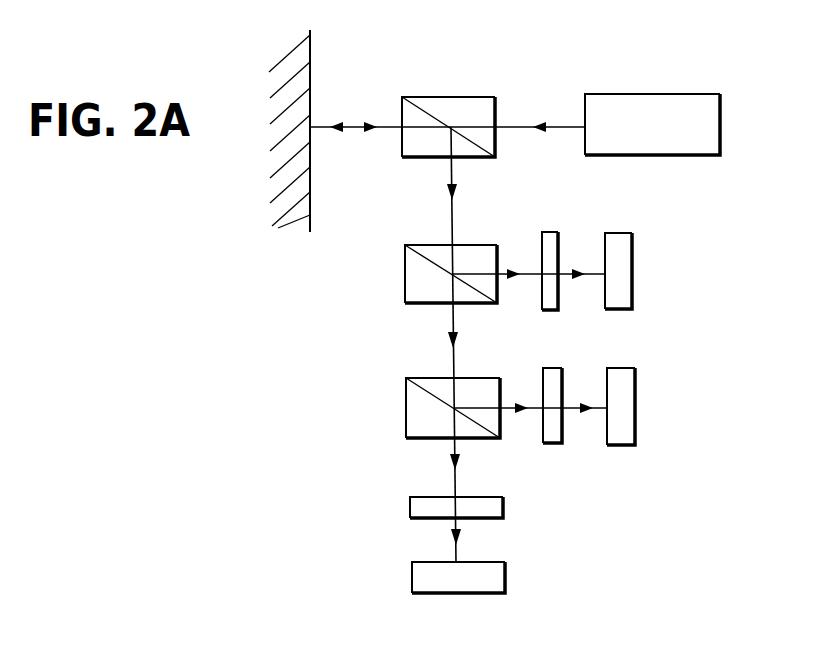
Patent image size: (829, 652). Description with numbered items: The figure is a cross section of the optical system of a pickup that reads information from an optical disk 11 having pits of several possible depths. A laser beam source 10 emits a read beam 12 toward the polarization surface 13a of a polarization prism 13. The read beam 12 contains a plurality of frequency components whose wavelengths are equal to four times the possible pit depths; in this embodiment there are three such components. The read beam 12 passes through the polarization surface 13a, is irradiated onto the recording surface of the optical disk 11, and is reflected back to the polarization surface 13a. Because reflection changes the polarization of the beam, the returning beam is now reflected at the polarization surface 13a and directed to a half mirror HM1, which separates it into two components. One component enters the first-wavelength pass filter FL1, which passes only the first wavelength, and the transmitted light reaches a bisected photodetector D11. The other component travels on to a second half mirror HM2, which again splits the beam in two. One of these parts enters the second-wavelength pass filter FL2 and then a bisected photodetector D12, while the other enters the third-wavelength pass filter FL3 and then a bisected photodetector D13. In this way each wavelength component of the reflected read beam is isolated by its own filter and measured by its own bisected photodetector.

The laser beam source 10 is at (662, 105).
The optical disk 11 is at (310, 53).
The read beam 12 is at (557, 121).
The polarization prism 13 is at (482, 120).
The polarization surface 13a is at (478, 143).
The half mirror HM1 is at (405, 275).
The half mirror HM2 is at (406, 408).
The λ1-pass filter FL1 is at (551, 240).
The λ2-pass filter FL2 is at (553, 377).
The λ3-pass filter FL3 is at (497, 505).
The bisected photodetector D11 is at (622, 248).
The bisected photodetector D12 is at (625, 385).
The bisected photodetector D13 is at (497, 578).